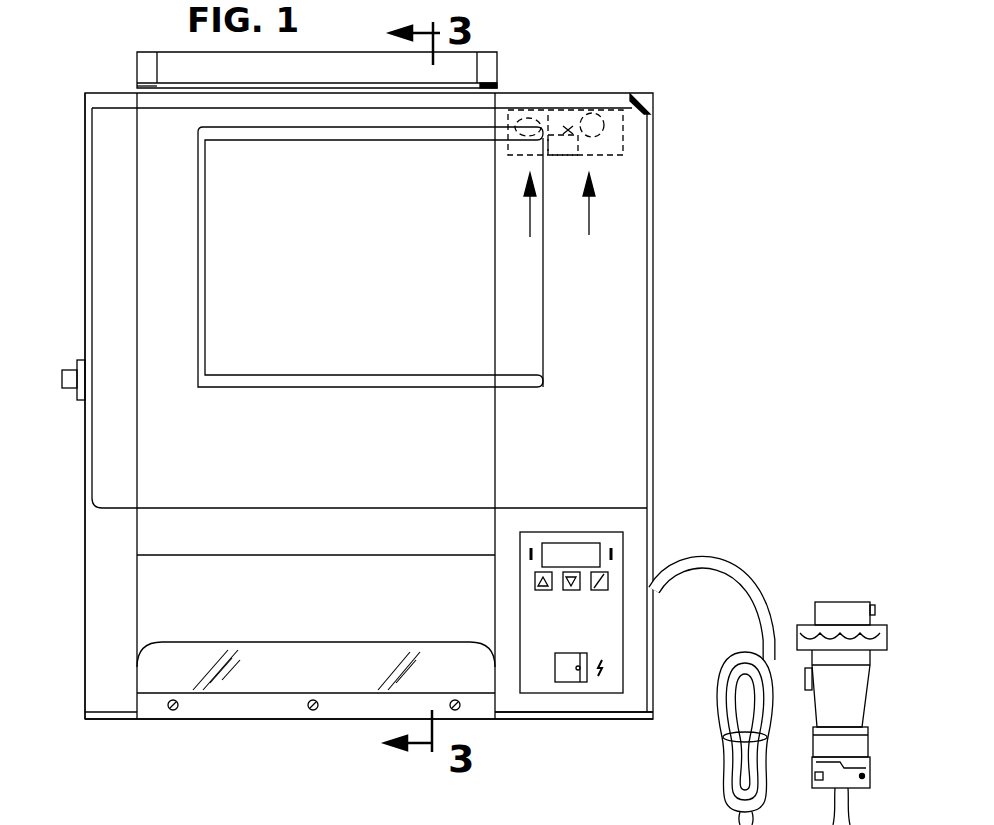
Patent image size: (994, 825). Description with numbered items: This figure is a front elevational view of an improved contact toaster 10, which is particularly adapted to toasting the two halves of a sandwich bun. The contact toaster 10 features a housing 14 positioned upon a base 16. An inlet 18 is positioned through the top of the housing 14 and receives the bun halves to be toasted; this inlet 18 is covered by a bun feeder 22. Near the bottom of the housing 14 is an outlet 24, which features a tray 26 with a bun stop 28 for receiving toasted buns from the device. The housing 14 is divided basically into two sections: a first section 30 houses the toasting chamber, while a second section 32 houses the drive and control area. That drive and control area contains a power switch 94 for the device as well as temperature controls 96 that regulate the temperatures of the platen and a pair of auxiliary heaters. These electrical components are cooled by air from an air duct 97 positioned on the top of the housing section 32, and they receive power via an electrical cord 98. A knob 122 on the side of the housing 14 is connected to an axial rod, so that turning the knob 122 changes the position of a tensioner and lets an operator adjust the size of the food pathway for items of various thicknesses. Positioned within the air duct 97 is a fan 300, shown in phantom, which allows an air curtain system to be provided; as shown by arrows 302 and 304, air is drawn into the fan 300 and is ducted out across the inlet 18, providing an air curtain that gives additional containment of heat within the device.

The contact toaster 10 is at (700, 92).
The housing 14 is at (690, 284).
The base 16 is at (510, 720).
The inlet 18 is at (183, 84).
The bun feeder 22 is at (470, 52).
The outlet 24 is at (137, 607).
The tray 26 is at (147, 720).
The bun stop 28 is at (243, 678).
The first section 30 is at (167, 528).
The second section 32 is at (612, 185).
The power switch 94 is at (590, 678).
The temperature controls 96 is at (607, 580).
The air duct 97 is at (605, 100).
The electrical cord 98 is at (735, 578).
The knob 122 is at (62, 388).
The fan 300 is at (545, 108).
The arrow 302 is at (532, 208).
The arrow 304 is at (590, 203).